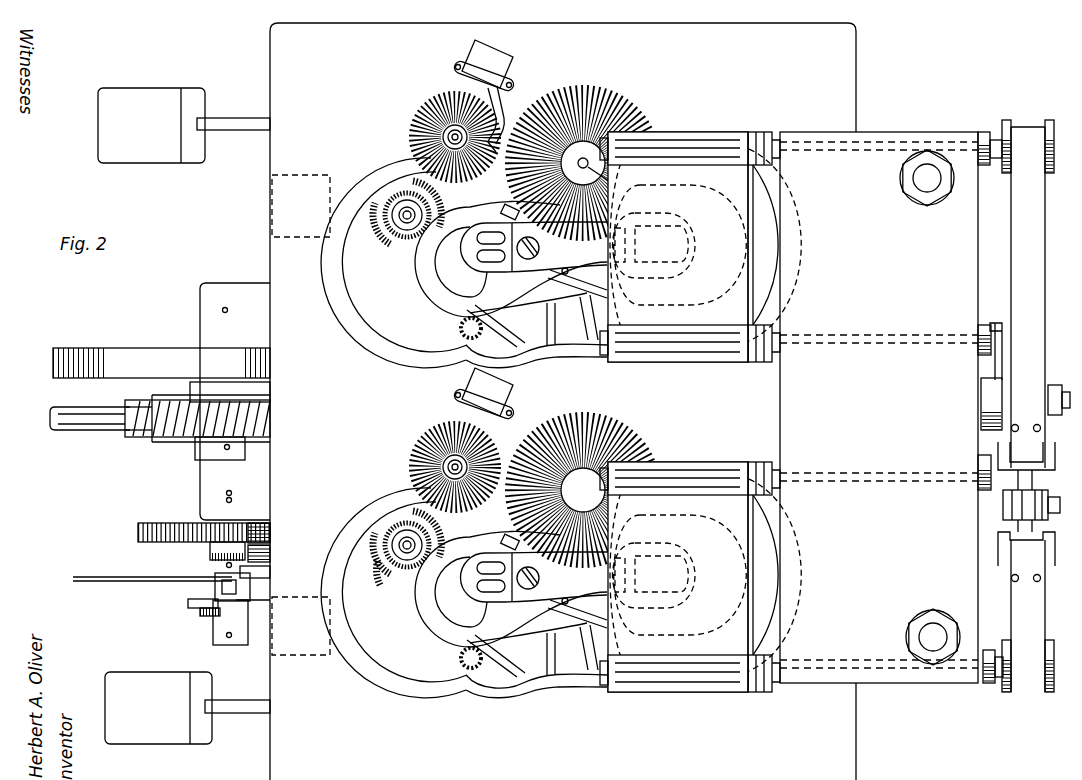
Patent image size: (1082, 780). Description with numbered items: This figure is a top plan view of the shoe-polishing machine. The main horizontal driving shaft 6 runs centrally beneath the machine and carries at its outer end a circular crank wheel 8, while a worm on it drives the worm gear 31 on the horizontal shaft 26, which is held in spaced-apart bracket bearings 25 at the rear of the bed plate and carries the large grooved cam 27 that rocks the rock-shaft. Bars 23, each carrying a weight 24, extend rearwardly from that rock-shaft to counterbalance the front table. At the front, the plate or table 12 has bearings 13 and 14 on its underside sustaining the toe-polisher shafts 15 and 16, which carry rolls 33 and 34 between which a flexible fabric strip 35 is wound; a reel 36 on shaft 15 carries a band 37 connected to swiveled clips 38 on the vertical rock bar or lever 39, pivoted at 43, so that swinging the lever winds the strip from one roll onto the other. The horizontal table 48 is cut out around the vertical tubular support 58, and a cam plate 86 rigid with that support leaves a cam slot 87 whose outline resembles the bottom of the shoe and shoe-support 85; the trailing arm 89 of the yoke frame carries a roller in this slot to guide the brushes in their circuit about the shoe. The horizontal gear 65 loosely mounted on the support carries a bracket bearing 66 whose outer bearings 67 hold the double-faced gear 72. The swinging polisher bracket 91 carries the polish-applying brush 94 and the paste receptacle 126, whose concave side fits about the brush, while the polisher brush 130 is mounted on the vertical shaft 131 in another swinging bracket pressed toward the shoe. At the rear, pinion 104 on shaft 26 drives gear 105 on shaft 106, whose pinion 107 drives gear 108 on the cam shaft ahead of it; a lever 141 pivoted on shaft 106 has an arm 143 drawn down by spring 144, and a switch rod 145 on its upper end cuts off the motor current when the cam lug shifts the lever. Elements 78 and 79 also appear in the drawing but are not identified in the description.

The horizontal plate or table 48 is at (563, 401).
The weight 24 is at (155, 416).
The rearwardly-extending bar 23 is at (236, 132).
The bracket bearing 25 is at (230, 401).
The horizontal shaft 26 is at (243, 501).
The cam 27 is at (161, 363).
The main driving shaft 6 is at (76, 422).
The worm gear 31 is at (140, 438).
The gear 105 is at (140, 525).
The pinion 104 is at (268, 526).
The gear 108 is at (270, 552).
The pinion 107 is at (210, 554).
The horizontal shaft 106 is at (270, 570).
The switch rod 145 is at (100, 577).
The lever 141 is at (250, 586).
The arm 143 is at (188, 603).
The spring 144 is at (205, 614).
The polish-applying brush 94 is at (410, 122).
The polisher brush 130 is at (605, 100).
The vertical shaft 131 is at (615, 177).
The paste receptacle 126 is at (475, 44).
The swinging polisher bracket 91 is at (511, 119).
The cam slot 87 is at (420, 320).
The cam plate 86 is at (440, 278).
The body 78 is at (521, 412).
The shoe and shoe-support 85 is at (562, 432).
The horizontally-projecting arm 89 is at (495, 175).
The horizontal gear 65 is at (462, 328).
The tubular support 58 is at (470, 340).
The bracket bearing 66 is at (408, 240).
The gear segment 79 is at (410, 185).
The bearing 67 is at (398, 218).
The double-faced gear 72 is at (395, 575).
The flexible band or fabric strip 35 is at (752, 288).
The roll 33 is at (753, 132).
The roll 34 is at (755, 362).
The plate or table 12 is at (879, 407).
The toe-polisher shaft 15 is at (842, 150).
The toe-polisher shaft 16 is at (843, 335).
The bearing 13 is at (978, 132).
The band 37 is at (1023, 406).
The pulley or reel 36 is at (1048, 120).
The swiveled clip 38 is at (958, 550).
The rock bar or lever 39 is at (1025, 500).
The pivot 43 is at (992, 395).
The crank wheel 8 is at (998, 323).
The bearing 14 is at (978, 330).